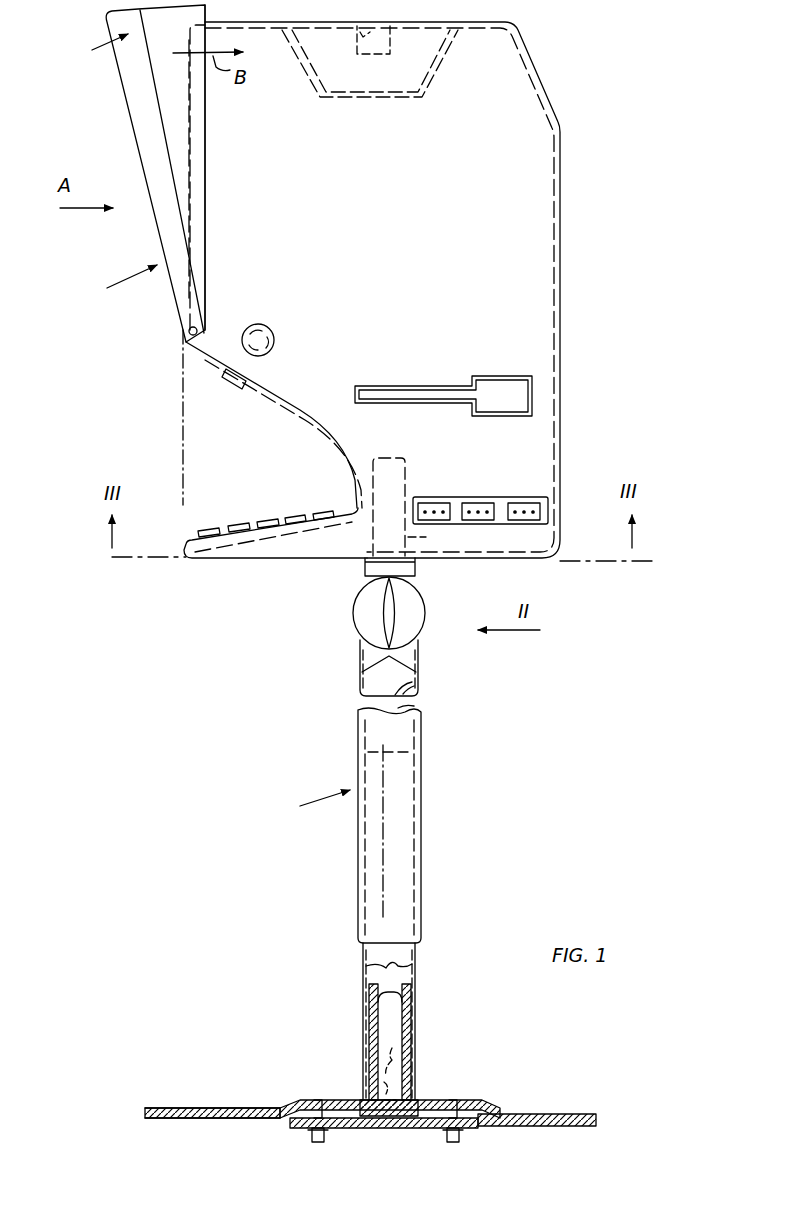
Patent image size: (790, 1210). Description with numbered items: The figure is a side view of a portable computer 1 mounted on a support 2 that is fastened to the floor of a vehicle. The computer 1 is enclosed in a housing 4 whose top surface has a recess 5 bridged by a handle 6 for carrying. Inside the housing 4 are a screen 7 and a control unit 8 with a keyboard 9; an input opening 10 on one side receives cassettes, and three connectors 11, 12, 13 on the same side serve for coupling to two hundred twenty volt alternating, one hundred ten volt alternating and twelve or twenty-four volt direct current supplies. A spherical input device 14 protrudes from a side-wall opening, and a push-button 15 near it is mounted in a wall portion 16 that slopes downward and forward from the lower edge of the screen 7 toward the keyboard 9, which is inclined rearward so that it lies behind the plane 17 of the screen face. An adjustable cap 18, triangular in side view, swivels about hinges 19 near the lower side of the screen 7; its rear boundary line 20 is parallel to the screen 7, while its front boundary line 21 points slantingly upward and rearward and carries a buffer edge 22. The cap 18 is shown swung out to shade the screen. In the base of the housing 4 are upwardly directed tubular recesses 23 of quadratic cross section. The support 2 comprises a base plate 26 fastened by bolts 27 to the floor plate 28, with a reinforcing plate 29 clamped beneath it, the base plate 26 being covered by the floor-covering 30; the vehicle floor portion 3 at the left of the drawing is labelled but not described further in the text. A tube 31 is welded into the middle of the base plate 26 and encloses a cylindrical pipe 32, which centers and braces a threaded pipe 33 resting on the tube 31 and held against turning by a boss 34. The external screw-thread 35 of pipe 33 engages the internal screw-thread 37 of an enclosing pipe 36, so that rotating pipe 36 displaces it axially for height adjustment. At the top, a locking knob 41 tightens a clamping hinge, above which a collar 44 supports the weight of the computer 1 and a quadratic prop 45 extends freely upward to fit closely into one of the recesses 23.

The computer 1 is at (118, 280).
The support 2 is at (316, 804).
The base plate 3 is at (190, 1128).
The housing 4 is at (535, 220).
The recess 5 is at (403, 94).
The handle 6 is at (352, 52).
The screen 7 is at (192, 118).
The control unit 8 is at (275, 552).
The keyboard 9 is at (242, 523).
The input opening 10 is at (516, 352).
The connector 11 is at (436, 500).
The connector 12 is at (480, 500).
The connector 13 is at (526, 500).
The spherical input device 14 is at (270, 332).
The push-button 15 is at (232, 390).
The wall portion 16 is at (288, 422).
The plane 17 is at (183, 412).
The cap 18 is at (93, 46).
The hinge 19 is at (197, 330).
The rear boundary line 20 is at (207, 178).
The front boundary line 21 is at (140, 131).
The buffer edge 22 is at (132, 78).
The tubular recess 23 is at (408, 470).
The base plate 26 is at (345, 1100).
The bolt 27 is at (470, 1156).
The floor plate 28 is at (252, 1128).
The reinforcing plate 29 is at (410, 1148).
The floor-covering 30 is at (552, 1110).
The tube 31 is at (416, 1100).
The pipe 32 is at (388, 1015).
The pipe 33 is at (408, 957).
The boss 34 is at (422, 1062).
The screw-thread 35 is at (362, 953).
The pipe 36 is at (418, 683).
The internal screw-thread 37 is at (356, 727).
The locking knob 41 is at (360, 618).
The collar 44 is at (415, 563).
The prop 45 is at (431, 538).